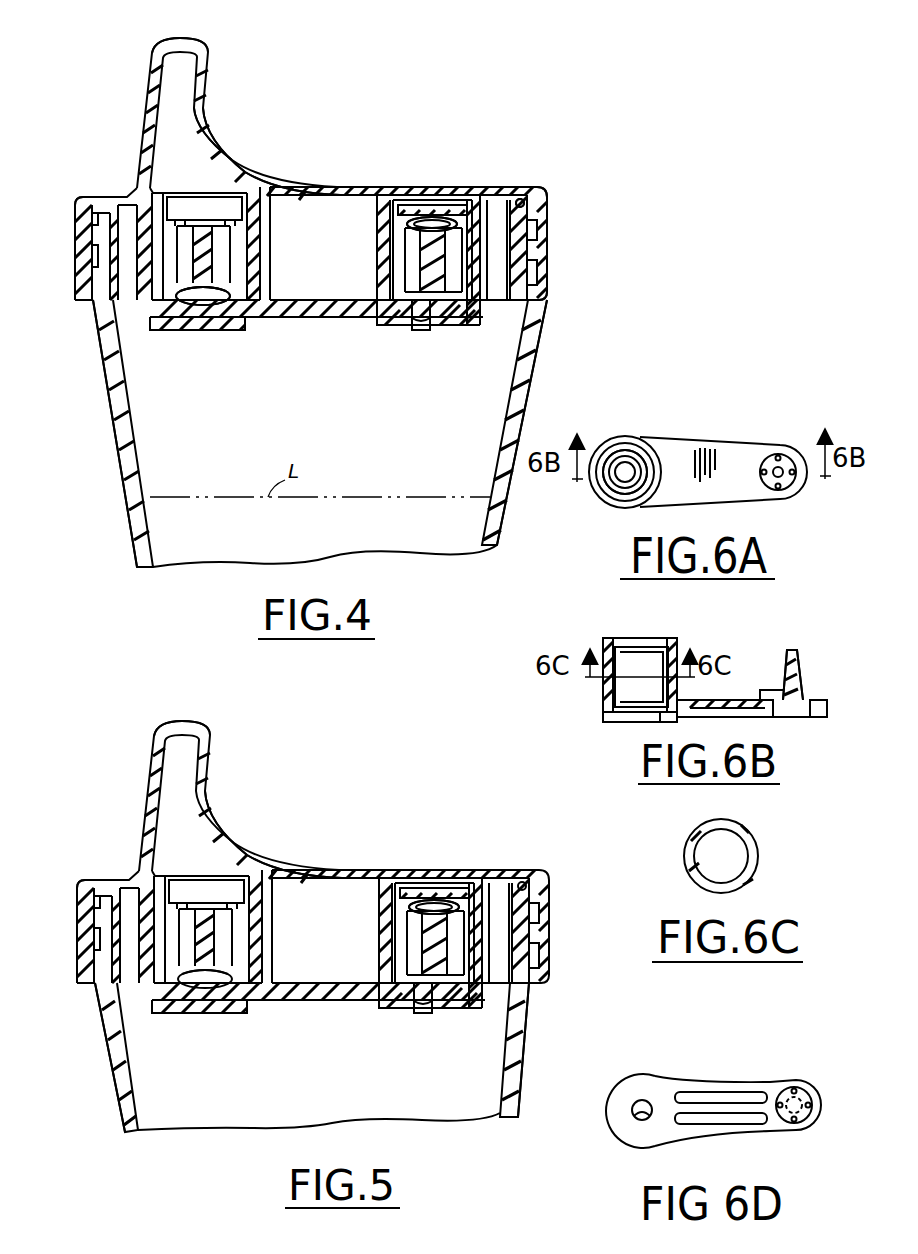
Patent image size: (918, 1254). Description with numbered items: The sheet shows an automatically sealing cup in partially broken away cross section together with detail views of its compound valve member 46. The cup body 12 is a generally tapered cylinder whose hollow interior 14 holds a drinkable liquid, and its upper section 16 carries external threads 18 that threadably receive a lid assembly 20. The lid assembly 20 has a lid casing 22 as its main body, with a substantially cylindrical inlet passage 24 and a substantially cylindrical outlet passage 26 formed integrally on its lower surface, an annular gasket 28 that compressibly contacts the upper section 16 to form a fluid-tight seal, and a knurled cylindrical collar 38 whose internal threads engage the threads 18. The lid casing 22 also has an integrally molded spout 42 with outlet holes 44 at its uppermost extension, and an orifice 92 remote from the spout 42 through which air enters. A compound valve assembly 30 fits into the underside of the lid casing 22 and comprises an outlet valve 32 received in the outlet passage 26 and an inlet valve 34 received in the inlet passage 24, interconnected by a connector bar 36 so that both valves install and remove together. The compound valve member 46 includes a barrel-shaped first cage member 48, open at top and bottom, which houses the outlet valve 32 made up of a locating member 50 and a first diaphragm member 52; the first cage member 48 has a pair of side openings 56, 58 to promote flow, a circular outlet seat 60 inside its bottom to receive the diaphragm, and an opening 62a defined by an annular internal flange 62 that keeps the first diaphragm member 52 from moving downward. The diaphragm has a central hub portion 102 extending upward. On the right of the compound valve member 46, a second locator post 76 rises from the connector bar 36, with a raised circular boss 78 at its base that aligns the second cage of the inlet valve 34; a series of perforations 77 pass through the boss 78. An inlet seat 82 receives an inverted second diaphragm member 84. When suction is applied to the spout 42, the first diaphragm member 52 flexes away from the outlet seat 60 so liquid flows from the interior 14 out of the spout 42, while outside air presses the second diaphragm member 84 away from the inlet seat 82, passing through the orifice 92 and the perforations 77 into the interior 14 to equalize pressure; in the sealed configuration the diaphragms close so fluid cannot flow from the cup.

In FIG. 4, the cup body 12 is at (536, 355).
In FIG. 4, the hollow interior 14 is at (268, 432).
In FIG. 4, the upper section 16 is at (530, 212).
In FIG. 4, the threads 18 is at (95, 247).
In FIG. 4, the lid assembly 20 is at (294, 98).
In FIG. 4, the lid casing 22 is at (570, 256).
In FIG. 4, the inlet passage 24 is at (393, 262).
In FIG. 5, the inlet passage 24 is at (397, 943).
In FIG. 4, the outlet passage 26 is at (152, 278).
In FIG. 5, the outlet passage 26 is at (286, 899).
In FIG. 4, the gasket 28 is at (102, 212).
In FIG. 5, the gasket 28 is at (88, 894).
In FIG. 4, the compound valve assembly 30 is at (254, 340).
In FIG. 5, the compound valve assembly 30 is at (265, 1022).
In FIG. 5, the outlet valve 32 is at (106, 1057).
In FIG. 5, the inlet valve 34 is at (499, 1050).
In FIG. 4, the connector bar 36 is at (343, 318).
In FIG. 6B, the connector bar 36 is at (750, 700).
In FIG. 6D, the connector bar 36 is at (730, 1082).
In FIG. 4, the cylindrical collar 38 is at (73, 240).
In FIG. 5, the cylindrical collar 38 is at (61, 947).
In FIG. 4, the spout 42 is at (217, 127).
In FIG. 5, the spout 42 is at (273, 806).
In FIG. 4, the outlet holes 44 is at (178, 38).
In FIG. 5, the outlet holes 44 is at (194, 710).
In FIG. 6A, the compound valve member 46 is at (707, 443).
In FIG. 6B, the compound valve member 46 is at (583, 713).
In FIG. 6D, the compound valve member 46 is at (671, 1070).
In FIG. 6B, the first cage member 48 is at (603, 693).
In FIG. 6C, the first cage member 48 is at (757, 853).
In FIG. 4, the locating member 50 is at (162, 312).
In FIG. 4, the first diaphragm member 52 is at (195, 318).
In FIG. 5, the first diaphragm member 52 is at (205, 992).
In FIG. 6C, the opening 56 is at (743, 827).
In FIG. 6C, the opening 58 is at (751, 877).
In FIG. 4, the outlet seat 60 is at (172, 318).
In FIG. 5, the outlet seat 60 is at (225, 962).
In FIG. 6A, the outlet seat 60 is at (620, 502).
In FIG. 6B, the outlet seat 60 is at (662, 700).
In FIG. 4, the internal flange 62 is at (188, 318).
In FIG. 6A, the internal flange 62 is at (628, 468).
In FIG. 6D, the internal flange 62 is at (638, 1118).
In FIG. 6B, the opening 62a is at (637, 722).
In FIG. 5, the second locator post 76 is at (444, 987).
In FIG. 6B, the second locator post 76 is at (797, 650).
In FIG. 4, the perforations 77 is at (413, 290).
In FIG. 6D, the perforations 77 is at (805, 1088).
In FIG. 6B, the raised circular boss 78 is at (815, 700).
In FIG. 4, the inlet seat 82 is at (405, 207).
In FIG. 4, the second diaphragm member 84 is at (462, 203).
In FIG. 5, the second diaphragm member 84 is at (459, 868).
In FIG. 4, the orifice 92 is at (428, 200).
In FIG. 5, the orifice 92 is at (428, 859).
In FIG. 4, the central hub portion 102 is at (212, 288).
In FIG. 5, the central hub portion 102 is at (302, 930).